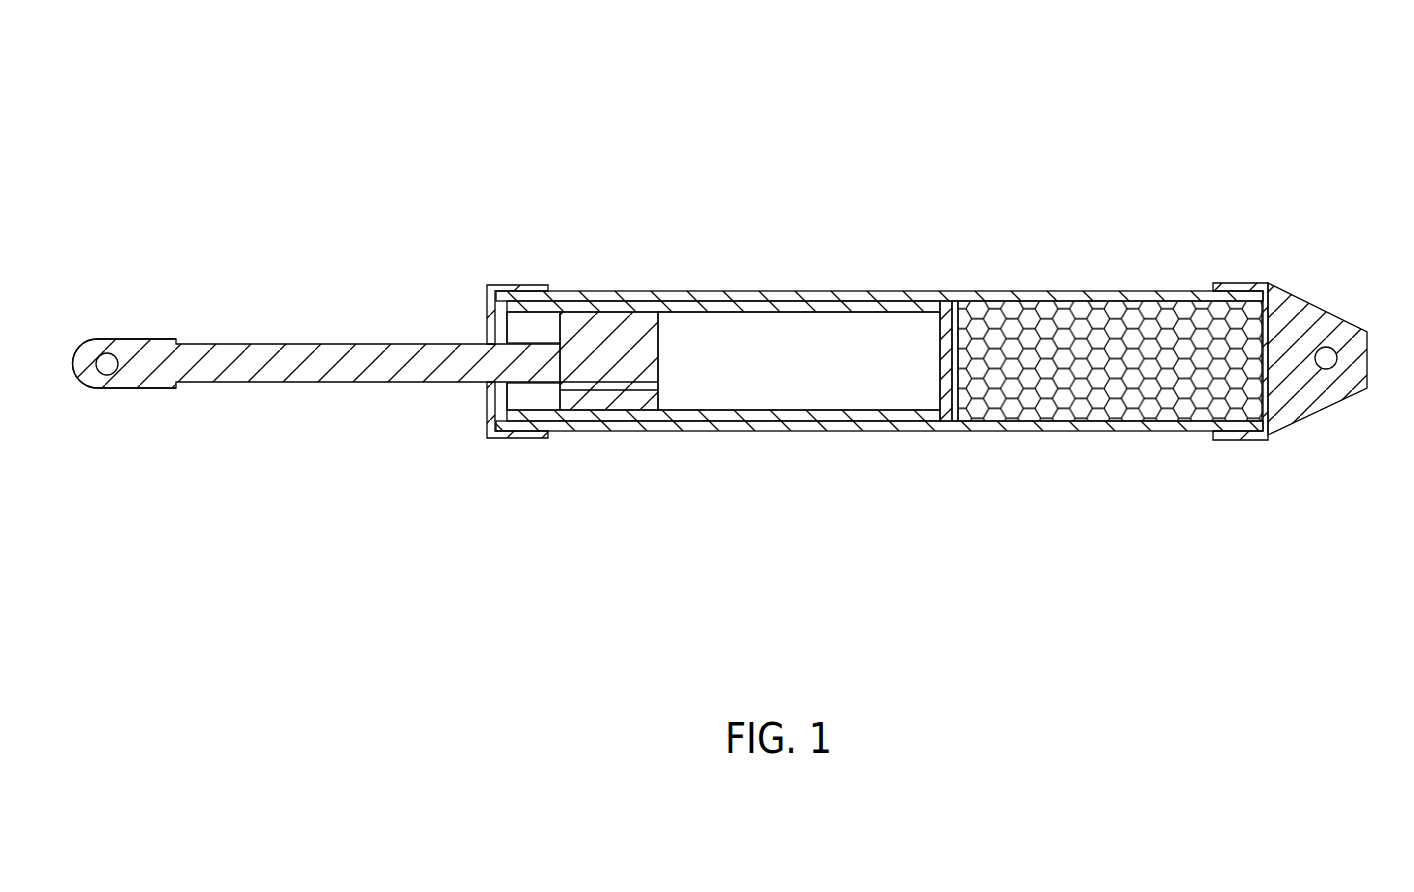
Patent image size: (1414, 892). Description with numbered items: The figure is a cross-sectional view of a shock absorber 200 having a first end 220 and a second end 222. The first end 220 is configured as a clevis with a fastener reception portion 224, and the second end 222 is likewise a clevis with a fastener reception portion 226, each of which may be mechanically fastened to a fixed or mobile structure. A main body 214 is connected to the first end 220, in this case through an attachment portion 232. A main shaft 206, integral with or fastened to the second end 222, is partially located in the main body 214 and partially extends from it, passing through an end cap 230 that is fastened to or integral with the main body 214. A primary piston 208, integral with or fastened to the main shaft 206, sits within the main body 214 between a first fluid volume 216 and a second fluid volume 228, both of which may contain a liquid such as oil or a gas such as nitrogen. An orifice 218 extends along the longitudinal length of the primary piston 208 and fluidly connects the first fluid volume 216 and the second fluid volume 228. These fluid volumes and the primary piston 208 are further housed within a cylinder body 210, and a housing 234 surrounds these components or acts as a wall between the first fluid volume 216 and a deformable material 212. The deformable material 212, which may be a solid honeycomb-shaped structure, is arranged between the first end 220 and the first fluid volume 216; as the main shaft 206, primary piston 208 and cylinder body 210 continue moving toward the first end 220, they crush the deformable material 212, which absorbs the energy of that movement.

The shock absorber 200 is at (957, 117).
The main shaft 206 is at (330, 350).
The primary piston 208 is at (610, 335).
The cylinder body 210 is at (830, 300).
The deformable material 212 is at (1110, 330).
The main body 214 is at (848, 427).
The first fluid volume 216 is at (767, 370).
The orifice 218 is at (635, 387).
The first end 220 is at (1298, 398).
The second end 222 is at (153, 383).
The fastener reception portion 224 is at (1329, 357).
The fastener reception portion 226 is at (108, 362).
The second fluid volume 228 is at (535, 397).
The end cap 230 is at (500, 290).
The attachment portion 232 is at (1236, 288).
The housing 234 is at (945, 410).